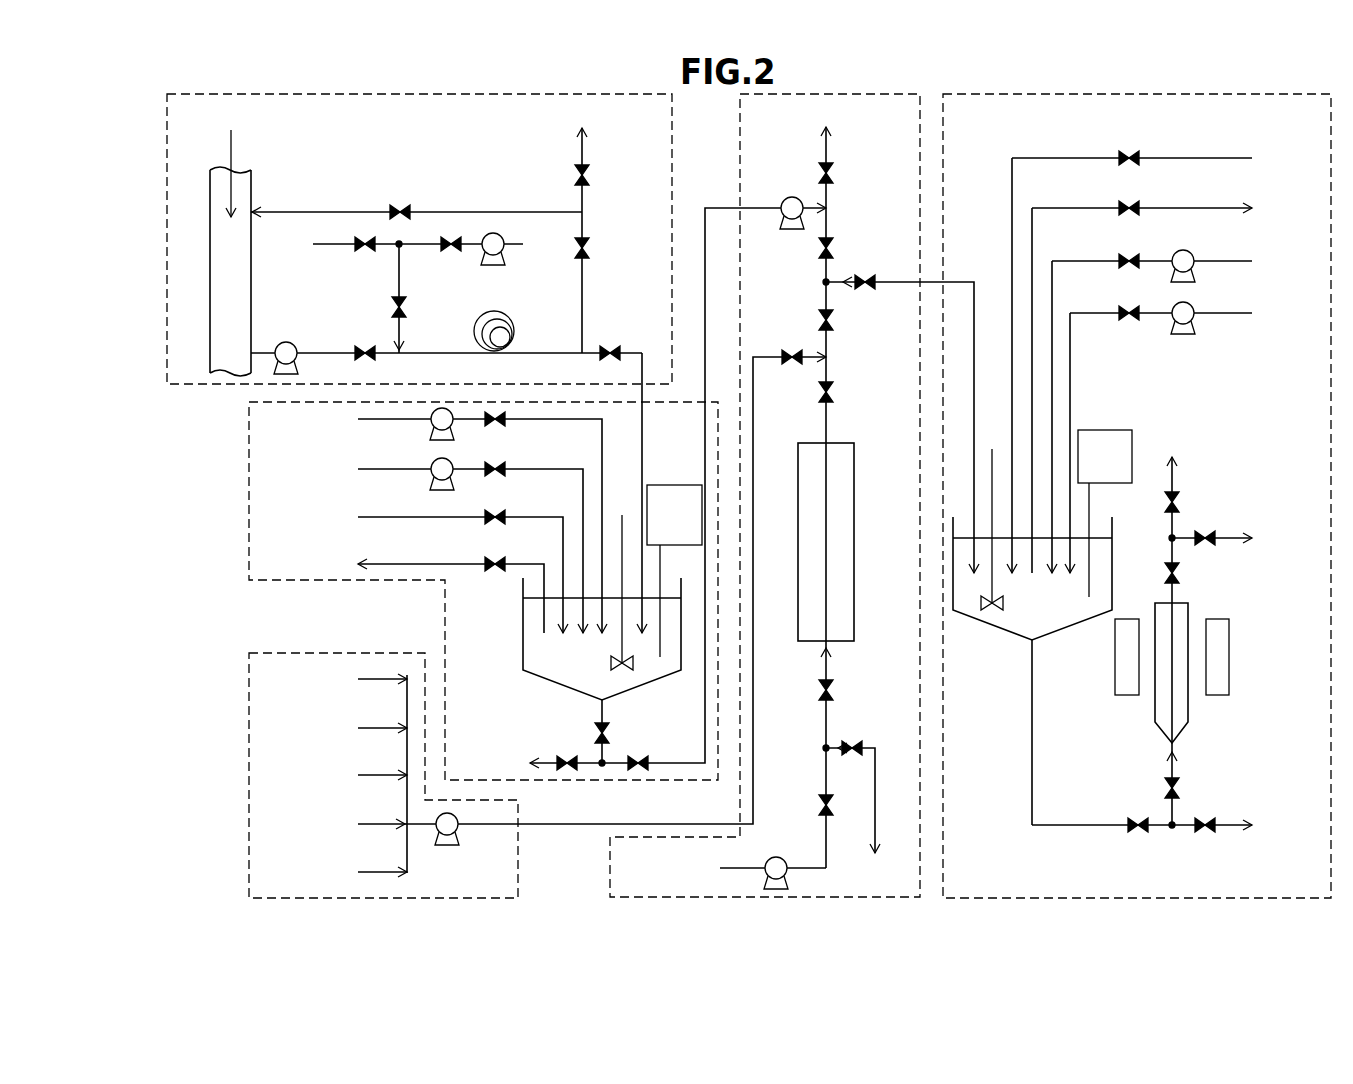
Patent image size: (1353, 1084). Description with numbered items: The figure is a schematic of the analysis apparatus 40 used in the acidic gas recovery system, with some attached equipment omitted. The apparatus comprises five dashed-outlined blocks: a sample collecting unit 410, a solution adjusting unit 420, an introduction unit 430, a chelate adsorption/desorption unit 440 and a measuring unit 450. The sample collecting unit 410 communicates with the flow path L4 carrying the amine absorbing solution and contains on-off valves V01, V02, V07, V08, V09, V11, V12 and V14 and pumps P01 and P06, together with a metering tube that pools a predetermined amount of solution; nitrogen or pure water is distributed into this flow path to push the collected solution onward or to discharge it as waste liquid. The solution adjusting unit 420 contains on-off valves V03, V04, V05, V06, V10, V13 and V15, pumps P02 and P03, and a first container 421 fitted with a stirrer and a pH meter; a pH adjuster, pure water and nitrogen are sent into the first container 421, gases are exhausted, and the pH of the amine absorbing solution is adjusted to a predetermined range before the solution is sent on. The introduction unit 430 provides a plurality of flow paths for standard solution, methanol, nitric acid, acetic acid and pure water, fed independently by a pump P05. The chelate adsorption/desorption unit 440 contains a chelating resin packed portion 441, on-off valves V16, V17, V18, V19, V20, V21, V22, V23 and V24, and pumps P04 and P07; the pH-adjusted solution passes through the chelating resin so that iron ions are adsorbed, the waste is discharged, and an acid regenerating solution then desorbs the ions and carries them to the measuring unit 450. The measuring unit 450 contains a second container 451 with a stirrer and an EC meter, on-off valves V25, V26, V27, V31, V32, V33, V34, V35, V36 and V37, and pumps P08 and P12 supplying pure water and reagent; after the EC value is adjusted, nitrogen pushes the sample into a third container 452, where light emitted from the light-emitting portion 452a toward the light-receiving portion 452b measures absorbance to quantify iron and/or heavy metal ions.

The analysis apparatus 40 is at (150, 83).
The sample collecting unit 410 is at (220, 390).
The solution adjusting unit 420 is at (265, 584).
The first container 421 is at (523, 638).
The introduction unit 430 is at (392, 902).
The chelate adsorption/desorption unit 440 is at (768, 900).
The chelating resin packed portion 441 is at (855, 460).
The measuring unit 450 is at (1112, 900).
The second container 451 is at (990, 626).
The third container 452 is at (1163, 732).
The light-emitting portion 452a is at (1115, 652).
The light-receiving portion 452b is at (1229, 656).
The flow path L4 is at (252, 178).
The pump P01 is at (284, 341).
The pump P02 is at (440, 440).
The pump P03 is at (440, 490).
The pump P04 is at (776, 856).
The pump P05 is at (450, 847).
The pump P06 is at (497, 267).
The pump P07 is at (790, 231).
The pump P08 is at (1185, 284).
The pump P12 is at (1185, 336).
The on-off valve V01 is at (367, 252).
The on-off valve V02 is at (365, 345).
The on-off valve V03 is at (500, 428).
The on-off valve V04 is at (500, 478).
The on-off valve V05 is at (495, 525).
The on-off valve V06 is at (497, 573).
The on-off valve V07 is at (405, 312).
The on-off valve V08 is at (403, 205).
The on-off valve V09 is at (455, 254).
The on-off valve V10 is at (565, 755).
The on-off valve V11 is at (590, 180).
The on-off valve V12 is at (590, 255).
The on-off valve V13 is at (607, 730).
The on-off valve V14 is at (607, 345).
The on-off valve V15 is at (640, 757).
The on-off valve V16 is at (787, 366).
The on-off valve V17 is at (833, 170).
The on-off valve V18 is at (830, 240).
The on-off valve V19 is at (833, 323).
The on-off valve V20 is at (832, 395).
The on-off valve V21 is at (832, 685).
The on-off valve V22 is at (822, 795).
The on-off valve V23 is at (862, 272).
The on-off valve V24 is at (850, 740).
The on-off valve V25 is at (1120, 152).
The on-off valve V26 is at (1120, 203).
The on-off valve V27 is at (1120, 256).
The on-off valve V31 is at (1120, 308).
The on-off valve V32 is at (1135, 835).
The on-off valve V33 is at (1180, 497).
The on-off valve V34 is at (1178, 577).
The on-off valve V35 is at (1180, 786).
The on-off valve V36 is at (1212, 530).
The on-off valve V37 is at (1208, 838).